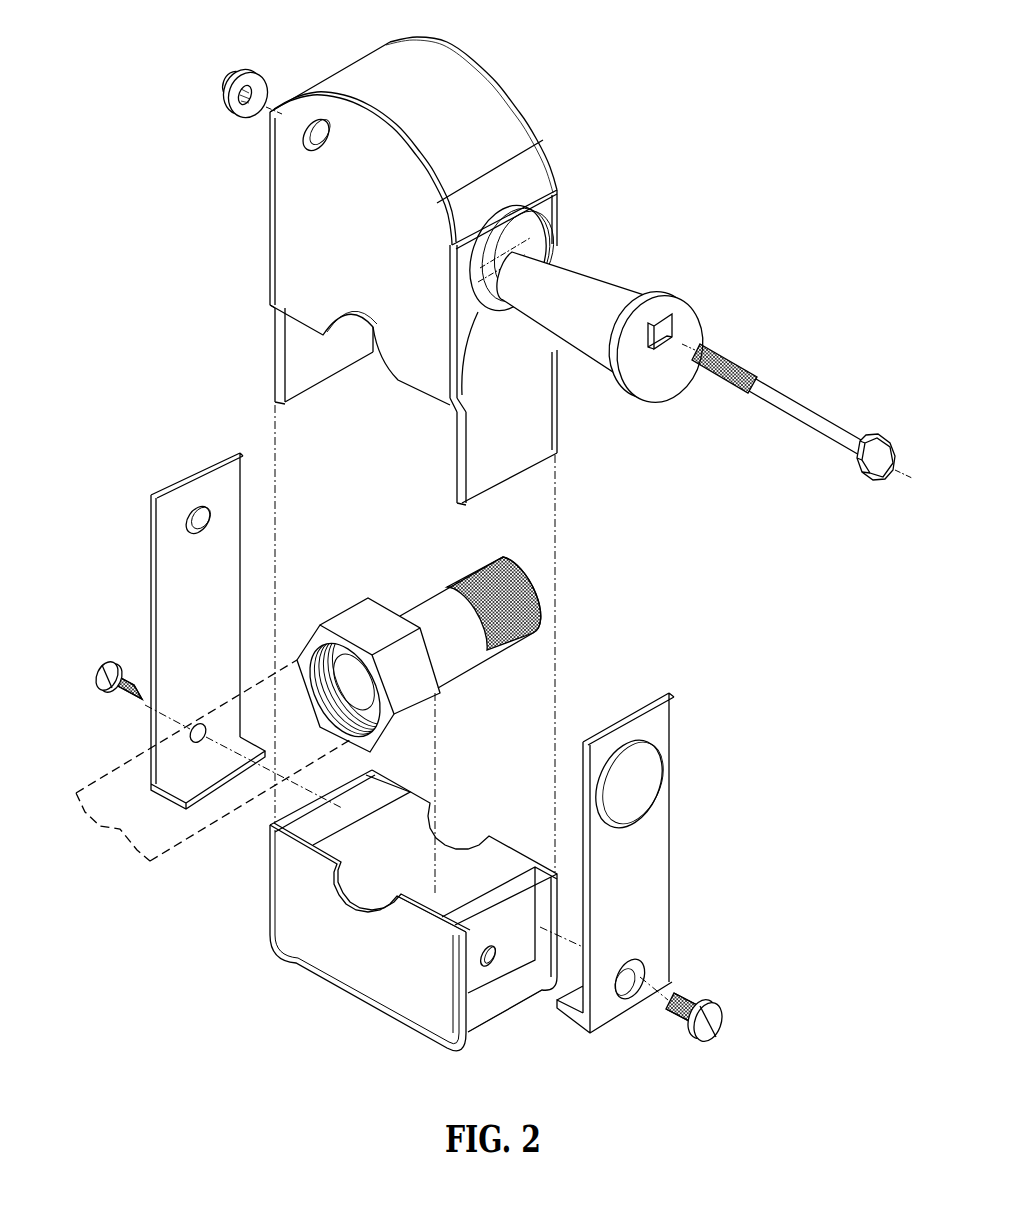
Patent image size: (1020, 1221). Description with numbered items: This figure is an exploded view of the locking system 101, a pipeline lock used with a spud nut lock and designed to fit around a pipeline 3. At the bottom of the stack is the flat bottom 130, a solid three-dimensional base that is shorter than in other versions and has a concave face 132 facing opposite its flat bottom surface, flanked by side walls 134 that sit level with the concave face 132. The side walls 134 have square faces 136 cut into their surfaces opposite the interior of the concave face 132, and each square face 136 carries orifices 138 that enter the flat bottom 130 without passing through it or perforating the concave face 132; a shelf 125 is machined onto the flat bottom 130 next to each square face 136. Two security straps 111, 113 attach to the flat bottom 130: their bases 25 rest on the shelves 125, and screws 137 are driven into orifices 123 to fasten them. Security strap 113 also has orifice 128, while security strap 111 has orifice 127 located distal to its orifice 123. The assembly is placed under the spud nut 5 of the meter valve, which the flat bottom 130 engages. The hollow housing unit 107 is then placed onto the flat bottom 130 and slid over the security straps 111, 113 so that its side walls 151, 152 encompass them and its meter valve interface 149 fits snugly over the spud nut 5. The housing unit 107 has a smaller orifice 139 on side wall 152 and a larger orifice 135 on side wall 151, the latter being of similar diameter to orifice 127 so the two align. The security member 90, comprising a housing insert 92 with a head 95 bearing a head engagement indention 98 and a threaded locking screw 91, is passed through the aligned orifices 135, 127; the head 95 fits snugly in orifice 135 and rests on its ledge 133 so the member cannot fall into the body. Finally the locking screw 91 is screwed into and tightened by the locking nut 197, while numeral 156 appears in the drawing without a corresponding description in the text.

The pipeline 3 is at (168, 852).
The spud nut 5 is at (427, 602).
The bases 25 is at (195, 779).
The security member 90 is at (617, 337).
The locking screw 91 is at (832, 420).
The housing insert 92 is at (597, 368).
The head 95 is at (667, 303).
The head engagement indention 98 is at (676, 327).
The locking system 101 is at (430, 269).
The hollow housing unit 107 is at (490, 63).
The security strap 111 is at (646, 863).
The security strap 113 is at (174, 656).
The orifice 123 is at (191, 735).
The shelf 125 is at (477, 1013).
The orifice 127 is at (663, 772).
The orifice 128 is at (188, 520).
The flat bottom 130 is at (380, 923).
The concave face 132 is at (415, 873).
The ledge 133 is at (450, 410).
The side walls 134 is at (268, 910).
The orifice 135 is at (530, 228).
The square faces 136 is at (345, 805).
The screws 137 is at (102, 664).
The orifices 138 is at (497, 960).
The orifice 139 is at (303, 136).
The meter valve interface 149 is at (342, 370).
The side wall 151 is at (545, 437).
The side wall 152 is at (268, 220).
The inner surface of side wall 156 is at (522, 885).
The locking nut 197 is at (240, 72).